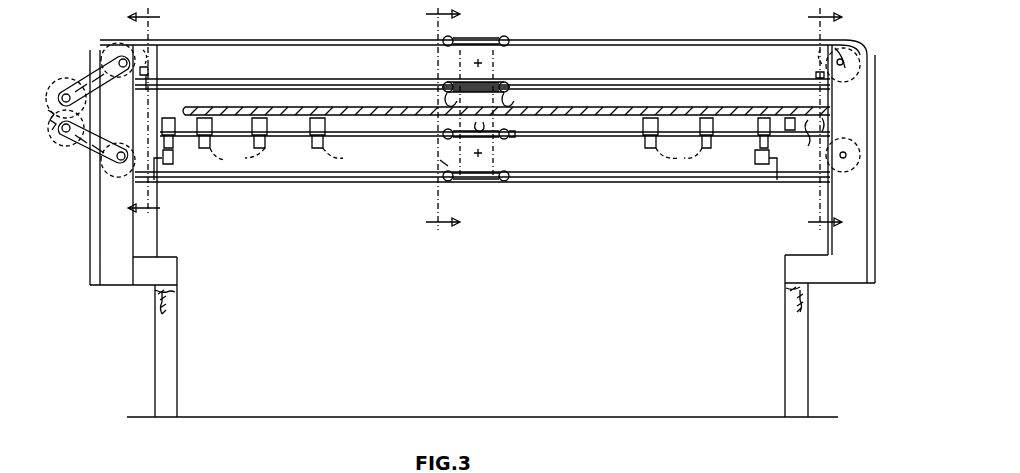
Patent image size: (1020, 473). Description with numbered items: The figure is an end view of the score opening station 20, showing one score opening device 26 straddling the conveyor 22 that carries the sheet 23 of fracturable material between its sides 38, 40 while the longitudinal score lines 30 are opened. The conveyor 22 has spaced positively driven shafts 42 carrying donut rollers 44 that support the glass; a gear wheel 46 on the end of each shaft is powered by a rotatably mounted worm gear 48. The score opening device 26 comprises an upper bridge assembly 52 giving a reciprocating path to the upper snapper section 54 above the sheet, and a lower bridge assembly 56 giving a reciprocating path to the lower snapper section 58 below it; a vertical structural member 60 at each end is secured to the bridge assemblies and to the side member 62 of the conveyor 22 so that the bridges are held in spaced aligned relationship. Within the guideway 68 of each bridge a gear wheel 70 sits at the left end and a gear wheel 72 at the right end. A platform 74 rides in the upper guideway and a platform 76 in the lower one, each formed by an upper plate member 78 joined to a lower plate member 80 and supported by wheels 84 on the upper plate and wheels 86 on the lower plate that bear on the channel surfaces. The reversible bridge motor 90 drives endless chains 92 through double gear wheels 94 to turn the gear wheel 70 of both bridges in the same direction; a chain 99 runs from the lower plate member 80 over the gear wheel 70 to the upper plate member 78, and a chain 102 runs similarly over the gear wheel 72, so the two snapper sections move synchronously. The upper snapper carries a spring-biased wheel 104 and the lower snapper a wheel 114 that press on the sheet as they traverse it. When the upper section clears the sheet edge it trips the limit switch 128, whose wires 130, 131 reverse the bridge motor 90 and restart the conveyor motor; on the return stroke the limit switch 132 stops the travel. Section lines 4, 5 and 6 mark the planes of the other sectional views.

The score opening station 20 is at (639, 276).
The conveyor 22 is at (314, 192).
The sheet 23 is at (676, 108).
The score opening device 26 is at (871, 37).
The longitudinal score lines 30 is at (223, 106).
The side of the sheet 38 is at (180, 108).
The side of the sheet 40 is at (796, 100).
The shafts 42 is at (270, 134).
The donut rollers 44 is at (324, 151).
The gear wheel 46 is at (820, 100).
The worm gear 48 is at (826, 124).
The upper bridge assembly 52 is at (726, 28).
The upper snapper section 54 is at (526, 64).
The lower bridge assembly 56 is at (624, 192).
The lower snapper section 58 is at (518, 140).
The vertical structural member 60 is at (106, 222).
The side member 62 is at (172, 160).
The guideway 68 is at (277, 463).
The gear wheel 70 is at (118, 40).
The gear wheel 72 is at (864, 69).
The platform 74 is at (506, 58).
The platform 76 is at (448, 166).
The upper plate member 78 is at (474, 28).
The lower plate member 80 is at (478, 182).
The wheels 84 is at (456, 46).
The wheels 86 is at (470, 169).
The bridge motor 90 is at (50, 86).
The endless chains 92 is at (80, 66).
The double gear wheels 94 is at (48, 112).
The chain 99 is at (309, 40).
The chain 102 is at (448, 94).
The wheel 104 is at (522, 82).
The wheel 114 is at (490, 122).
The limit switch 128 is at (816, 76).
The wire 130 is at (150, 64).
The wire 131 is at (162, 64).
The limit switch 132 is at (154, 93).
The section line 4- 4 is at (149, 114).
The section line 5- 5 is at (816, 120).
The section line 6- 6 is at (434, 119).